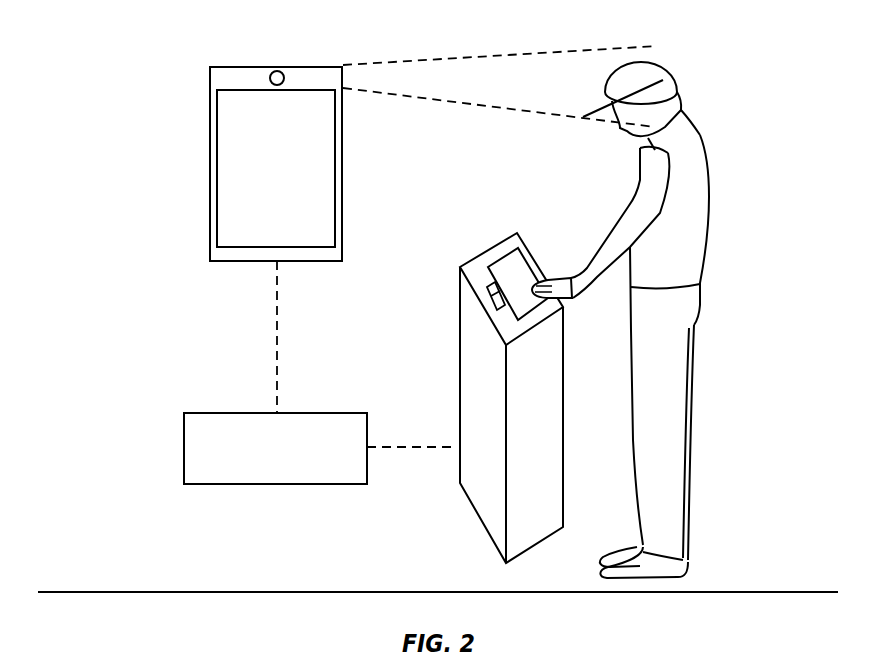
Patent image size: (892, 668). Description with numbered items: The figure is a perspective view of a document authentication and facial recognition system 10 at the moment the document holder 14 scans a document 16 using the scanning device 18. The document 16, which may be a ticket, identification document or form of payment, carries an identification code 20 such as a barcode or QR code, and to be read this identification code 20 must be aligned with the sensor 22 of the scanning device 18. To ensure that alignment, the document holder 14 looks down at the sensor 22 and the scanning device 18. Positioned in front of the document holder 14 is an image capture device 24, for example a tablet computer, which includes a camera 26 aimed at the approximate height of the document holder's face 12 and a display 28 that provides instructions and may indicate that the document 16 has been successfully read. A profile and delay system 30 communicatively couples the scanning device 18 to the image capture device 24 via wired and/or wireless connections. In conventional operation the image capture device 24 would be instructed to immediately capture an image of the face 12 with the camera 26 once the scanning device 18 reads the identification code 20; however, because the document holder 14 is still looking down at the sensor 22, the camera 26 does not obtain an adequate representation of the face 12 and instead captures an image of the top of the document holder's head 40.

The document authentication and facial recognition system 10 is at (142, 38).
The face 12 is at (608, 140).
The document holder 14 is at (704, 152).
The document 16 is at (502, 255).
The scanning device 18 is at (460, 384).
The identification code 20 is at (535, 263).
The sensor 22 is at (500, 307).
The image capture device 24 is at (211, 162).
The camera 26 is at (273, 70).
The display 28 is at (318, 155).
The profile and delay system 30 is at (276, 486).
The top of the document holder's head 40 is at (618, 68).